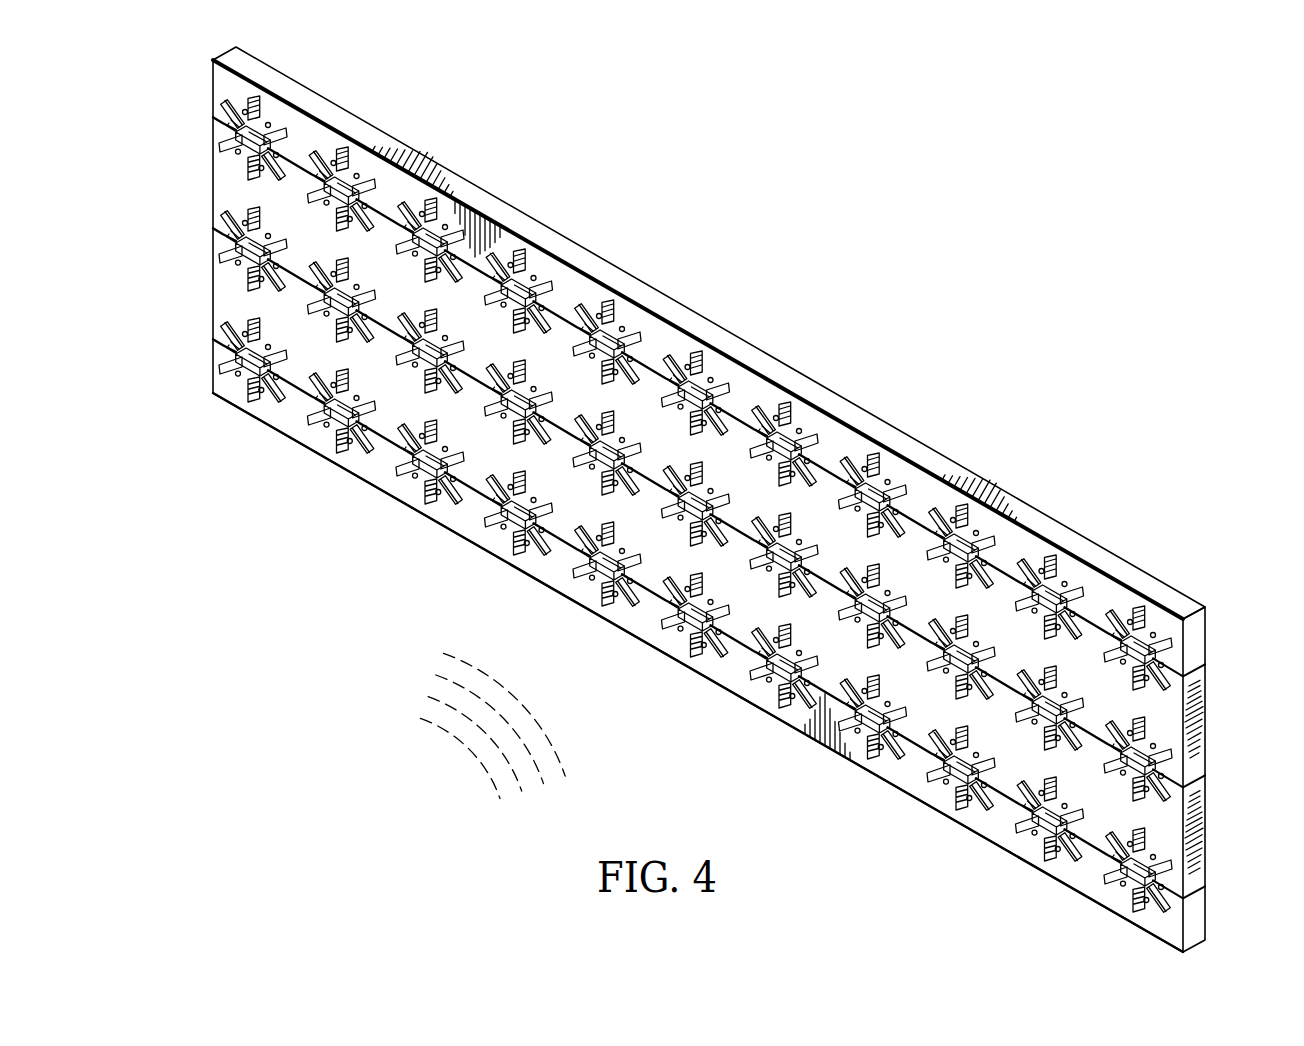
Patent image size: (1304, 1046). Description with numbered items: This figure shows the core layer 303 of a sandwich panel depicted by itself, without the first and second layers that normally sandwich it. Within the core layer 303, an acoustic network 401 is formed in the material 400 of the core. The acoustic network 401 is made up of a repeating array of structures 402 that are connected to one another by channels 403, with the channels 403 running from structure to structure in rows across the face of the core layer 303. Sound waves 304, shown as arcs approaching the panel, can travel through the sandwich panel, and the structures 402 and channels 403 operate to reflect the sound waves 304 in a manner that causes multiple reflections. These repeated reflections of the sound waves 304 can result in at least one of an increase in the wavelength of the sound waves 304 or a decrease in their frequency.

The material 400 is at (762, 363).
The core layer 303 is at (598, 268).
The acoustic network 401 is at (182, 114).
The structures 402 is at (226, 281).
The channels 403 is at (178, 232).
The sound waves 304 is at (552, 745).